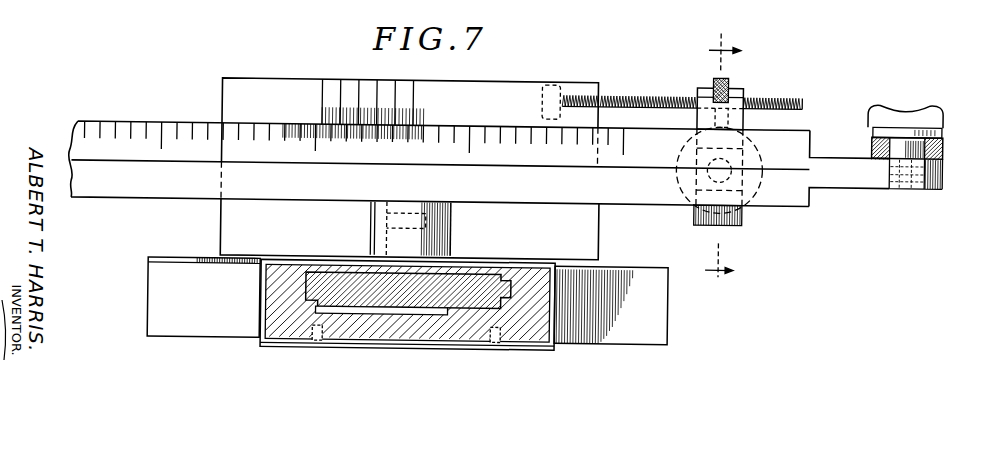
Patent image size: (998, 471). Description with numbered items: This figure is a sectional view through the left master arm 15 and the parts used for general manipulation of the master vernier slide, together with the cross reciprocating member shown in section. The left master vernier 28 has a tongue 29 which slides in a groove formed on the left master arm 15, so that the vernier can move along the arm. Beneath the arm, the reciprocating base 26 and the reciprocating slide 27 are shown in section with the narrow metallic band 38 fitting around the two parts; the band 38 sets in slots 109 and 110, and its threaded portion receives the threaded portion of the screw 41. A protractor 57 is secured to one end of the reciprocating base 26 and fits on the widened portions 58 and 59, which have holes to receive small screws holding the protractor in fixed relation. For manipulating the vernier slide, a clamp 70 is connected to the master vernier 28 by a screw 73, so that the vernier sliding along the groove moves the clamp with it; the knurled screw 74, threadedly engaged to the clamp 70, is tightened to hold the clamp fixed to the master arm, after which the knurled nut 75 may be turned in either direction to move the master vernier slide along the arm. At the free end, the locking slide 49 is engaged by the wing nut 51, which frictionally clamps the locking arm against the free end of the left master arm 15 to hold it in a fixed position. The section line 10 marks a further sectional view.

The left master arm 15 is at (356, 123).
The left master vernier 28 is at (410, 152).
The tongue 29 is at (428, 229).
The screw 41 is at (450, 216).
The screw 73 is at (682, 81).
The knurled nut 75 is at (698, 79).
The knurled screw 74 is at (731, 187).
The clamp 70 is at (701, 222).
The section line 10 is at (711, 158).
The locking slide 49 is at (930, 162).
The wing nut 51 is at (906, 106).
The widened portion 59 is at (182, 296).
The protractor 57 is at (210, 244).
The slot 110 is at (373, 304).
The reciprocating base 26 is at (388, 316).
The reciprocating slide 27 is at (408, 274).
The metallic band 38 is at (407, 360).
The widened portion 58 is at (631, 305).
The slot 109 is at (594, 324).